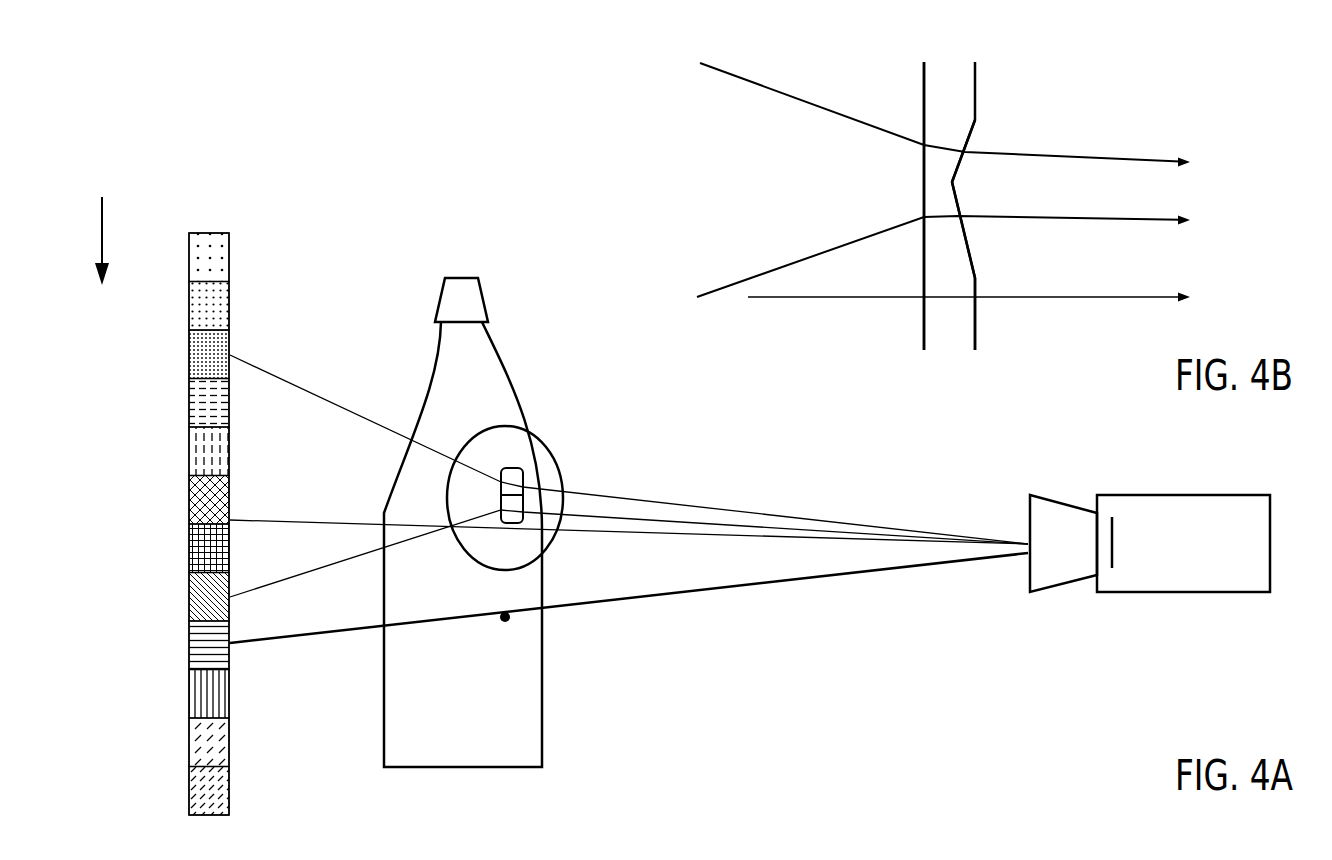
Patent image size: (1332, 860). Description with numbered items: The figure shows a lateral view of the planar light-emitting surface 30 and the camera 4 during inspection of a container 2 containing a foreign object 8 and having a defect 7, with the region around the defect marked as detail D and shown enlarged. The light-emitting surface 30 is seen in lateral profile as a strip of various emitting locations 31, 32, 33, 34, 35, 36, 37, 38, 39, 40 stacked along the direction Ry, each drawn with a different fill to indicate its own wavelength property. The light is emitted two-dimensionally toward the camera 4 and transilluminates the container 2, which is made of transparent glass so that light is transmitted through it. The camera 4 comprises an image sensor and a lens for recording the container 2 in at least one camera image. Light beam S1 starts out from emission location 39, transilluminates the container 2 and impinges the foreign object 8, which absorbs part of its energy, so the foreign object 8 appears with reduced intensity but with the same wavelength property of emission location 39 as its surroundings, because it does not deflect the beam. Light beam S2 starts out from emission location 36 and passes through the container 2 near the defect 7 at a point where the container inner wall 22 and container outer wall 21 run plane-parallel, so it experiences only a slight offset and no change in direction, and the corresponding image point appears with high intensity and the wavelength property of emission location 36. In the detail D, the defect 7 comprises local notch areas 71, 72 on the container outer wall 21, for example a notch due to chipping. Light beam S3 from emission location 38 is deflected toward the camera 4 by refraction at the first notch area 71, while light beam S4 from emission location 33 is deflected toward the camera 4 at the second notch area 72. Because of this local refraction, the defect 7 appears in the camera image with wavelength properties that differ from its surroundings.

In FIG. 4A, the container 2 is at (477, 343).
In FIG. 4B, the container 2 is at (938, 336).
In FIG. 4A, the camera 4 is at (1177, 552).
In FIG. 4A, the defect 7 is at (512, 468).
In FIG. 4B, the defect 7 is at (997, 193).
In FIG. 4A, the foreign object 8 is at (512, 617).
In FIG. 4B, the container outer wall 21 is at (975, 330).
In FIG. 4B, the container inner wall 22 is at (924, 262).
In FIG. 4A, the light-emitting surface 30 is at (198, 485).
In FIG. 4A, the emission location 31 is at (197, 258).
In FIG. 4A, the emission location 32 is at (197, 307).
In FIG. 4A, the emission location 33 is at (197, 355).
In FIG. 4A, the emission location 34 is at (197, 404).
In FIG. 4A, the emission location 35 is at (197, 452).
In FIG. 4A, the emission location 36 is at (197, 501).
In FIG. 4A, the emission location 37 is at (197, 549).
In FIG. 4A, the emission location 38 is at (197, 598).
In FIG. 4A, the emission location 39 is at (197, 646).
In FIG. 4A, the emission location 40 is at (197, 695).
In FIG. 4B, the first notch area 71 is at (955, 190).
In FIG. 4B, the second notch area 72 is at (967, 138).
In FIG. 4A, the detail D is at (563, 462).
In FIG. 4B, the detail D is at (1164, 80).
In FIG. 4A, the light beam S1 is at (310, 637).
In FIG. 4A, the light beam S2 is at (294, 518).
In FIG. 4B, the light beam S2 is at (1082, 298).
In FIG. 4A, the light beam S3 is at (325, 570).
In FIG. 4B, the light beam S3 is at (1135, 222).
In FIG. 4A, the light beam S4 is at (318, 395).
In FIG. 4B, the light beam S4 is at (1128, 155).
In FIG. 4A, the direction axis Ry is at (100, 234).